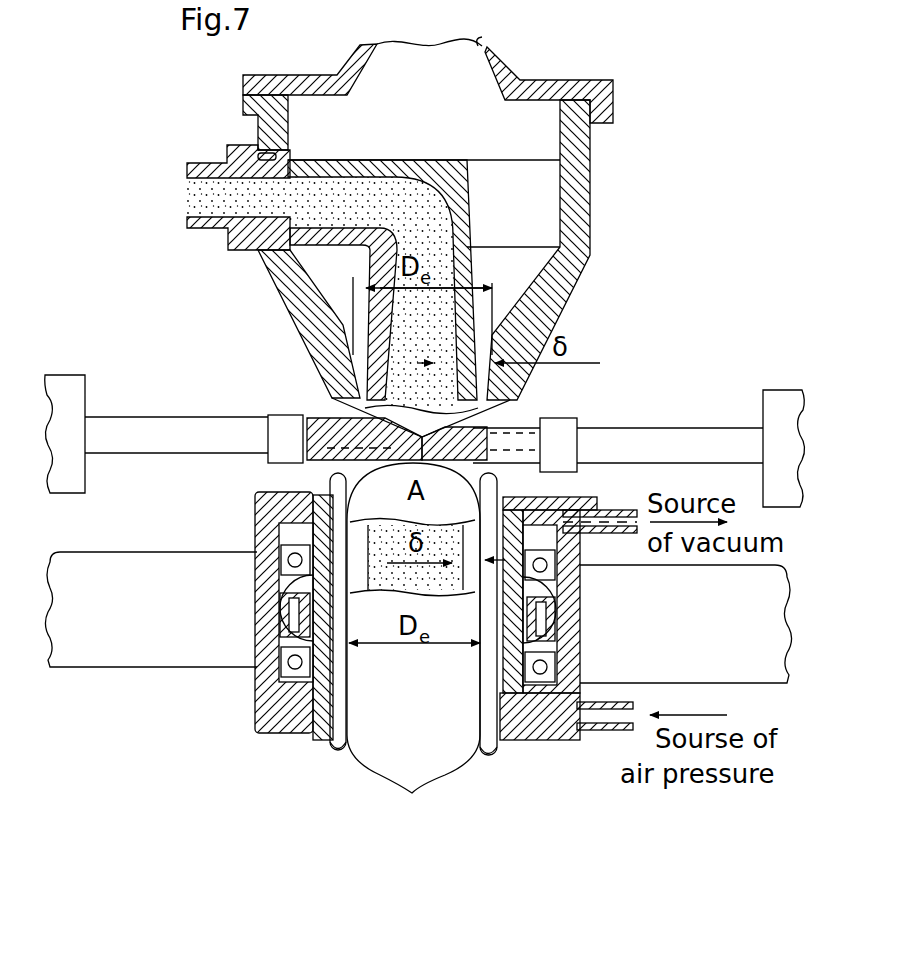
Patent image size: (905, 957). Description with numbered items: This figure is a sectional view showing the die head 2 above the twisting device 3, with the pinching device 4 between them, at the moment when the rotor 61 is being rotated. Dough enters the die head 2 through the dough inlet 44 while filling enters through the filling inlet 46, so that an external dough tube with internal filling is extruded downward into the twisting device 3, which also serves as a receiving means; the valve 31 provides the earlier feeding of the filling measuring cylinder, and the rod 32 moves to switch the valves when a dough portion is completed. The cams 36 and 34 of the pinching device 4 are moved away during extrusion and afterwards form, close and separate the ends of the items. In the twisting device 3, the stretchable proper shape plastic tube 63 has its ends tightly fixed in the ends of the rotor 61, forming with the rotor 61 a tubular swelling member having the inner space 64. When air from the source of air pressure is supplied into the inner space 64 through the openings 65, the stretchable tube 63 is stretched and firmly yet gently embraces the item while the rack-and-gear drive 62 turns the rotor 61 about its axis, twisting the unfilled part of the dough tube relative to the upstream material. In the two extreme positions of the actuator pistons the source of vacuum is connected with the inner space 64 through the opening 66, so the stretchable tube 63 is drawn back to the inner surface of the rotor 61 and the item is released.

The die head 2 is at (592, 152).
The dough inlet 44 is at (473, 42).
The filling inlet 46 is at (192, 198).
The valve 31 is at (363, 372).
The rod 32 is at (470, 405).
The pinching device 4 is at (53, 384).
The cam 36 is at (283, 428).
The cam 34 is at (563, 421).
The openings 65 is at (473, 720).
The stretchable plastic tube 63 is at (333, 755).
The inner space 64 is at (483, 757).
The rotor 61 is at (302, 707).
The opening 66 is at (262, 497).
The rack-and-gear drive 62 is at (256, 613).
The twisting device 3 is at (233, 673).